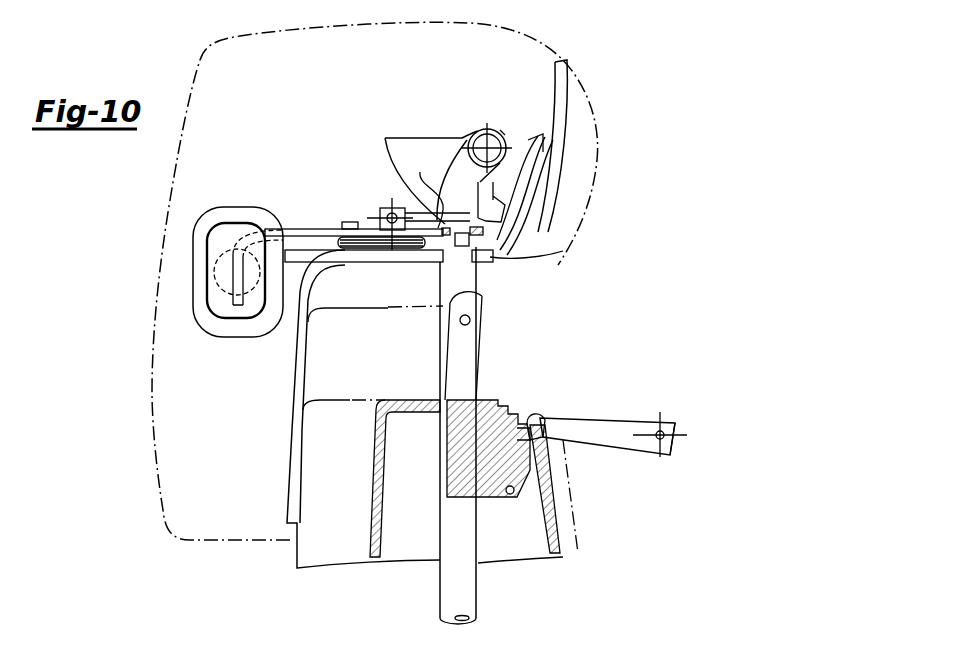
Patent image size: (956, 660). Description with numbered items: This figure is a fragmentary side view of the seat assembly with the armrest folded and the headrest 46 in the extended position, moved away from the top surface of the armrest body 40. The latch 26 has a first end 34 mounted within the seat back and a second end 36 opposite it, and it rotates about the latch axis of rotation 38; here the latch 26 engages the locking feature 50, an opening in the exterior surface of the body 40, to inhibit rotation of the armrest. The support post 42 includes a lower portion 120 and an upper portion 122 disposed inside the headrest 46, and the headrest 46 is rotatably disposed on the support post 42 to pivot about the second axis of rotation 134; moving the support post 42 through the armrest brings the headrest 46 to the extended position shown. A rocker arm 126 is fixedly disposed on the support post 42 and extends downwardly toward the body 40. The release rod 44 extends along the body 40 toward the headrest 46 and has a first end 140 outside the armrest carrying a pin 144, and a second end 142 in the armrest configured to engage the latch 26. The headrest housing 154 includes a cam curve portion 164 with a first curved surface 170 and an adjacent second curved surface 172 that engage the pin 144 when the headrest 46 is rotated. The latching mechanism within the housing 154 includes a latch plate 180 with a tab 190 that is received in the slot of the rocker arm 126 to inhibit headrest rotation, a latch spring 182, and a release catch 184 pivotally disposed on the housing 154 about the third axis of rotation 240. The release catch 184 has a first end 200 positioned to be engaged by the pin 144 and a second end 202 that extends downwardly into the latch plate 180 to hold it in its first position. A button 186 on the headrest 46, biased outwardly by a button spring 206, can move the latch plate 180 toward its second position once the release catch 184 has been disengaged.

The latch 26 is at (603, 417).
The first end 34 is at (675, 450).
The second end 36 is at (529, 418).
The latch axis of rotation 38 is at (663, 422).
The body 40 is at (297, 552).
The support post 42 is at (465, 548).
The release rod 44 is at (462, 393).
The headrest 46 is at (206, 50).
The locking feature 50 is at (545, 421).
The lower portion 120 is at (480, 597).
The upper portion 122 is at (498, 132).
The rocker arm 126 is at (384, 152).
The second axis of rotation 134 is at (481, 140).
The first end 140 is at (478, 294).
The second end 142 is at (526, 429).
The pin 144 is at (470, 323).
The housing 154 is at (566, 88).
The cam curve portion 164 is at (527, 205).
The first curved surface 170 is at (517, 184).
The second curved surface 172 is at (535, 141).
The latch plate 180 is at (288, 228).
The latch spring 182 is at (355, 250).
The release catch 184 is at (423, 191).
The button 186 is at (196, 247).
The tab 190 is at (563, 251).
The first end 200 is at (482, 184).
The second end 202 is at (462, 247).
The button spring 206 is at (235, 275).
The third axis of rotation 240 is at (388, 208).